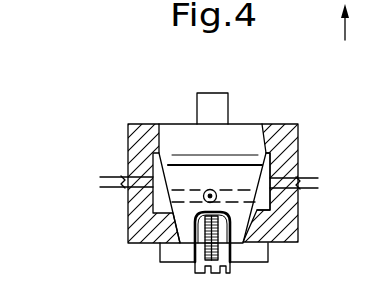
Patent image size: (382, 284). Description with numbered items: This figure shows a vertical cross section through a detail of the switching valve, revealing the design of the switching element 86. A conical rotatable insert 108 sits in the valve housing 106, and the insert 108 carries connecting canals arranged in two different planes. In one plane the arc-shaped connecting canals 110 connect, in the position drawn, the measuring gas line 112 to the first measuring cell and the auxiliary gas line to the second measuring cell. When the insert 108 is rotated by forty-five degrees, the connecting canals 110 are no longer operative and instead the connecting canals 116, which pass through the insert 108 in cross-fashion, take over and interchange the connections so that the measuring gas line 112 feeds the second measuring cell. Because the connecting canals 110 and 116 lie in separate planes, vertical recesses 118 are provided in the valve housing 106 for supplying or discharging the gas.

The switching element 86 is at (295, 123).
The valve housing 106 is at (290, 130).
The conical rotatable insert 108 is at (177, 133).
The connecting canals 110 is at (195, 163).
The measuring gas line 112 is at (318, 183).
The connecting canals 116 is at (245, 193).
The vertical recesses 118 is at (263, 170).